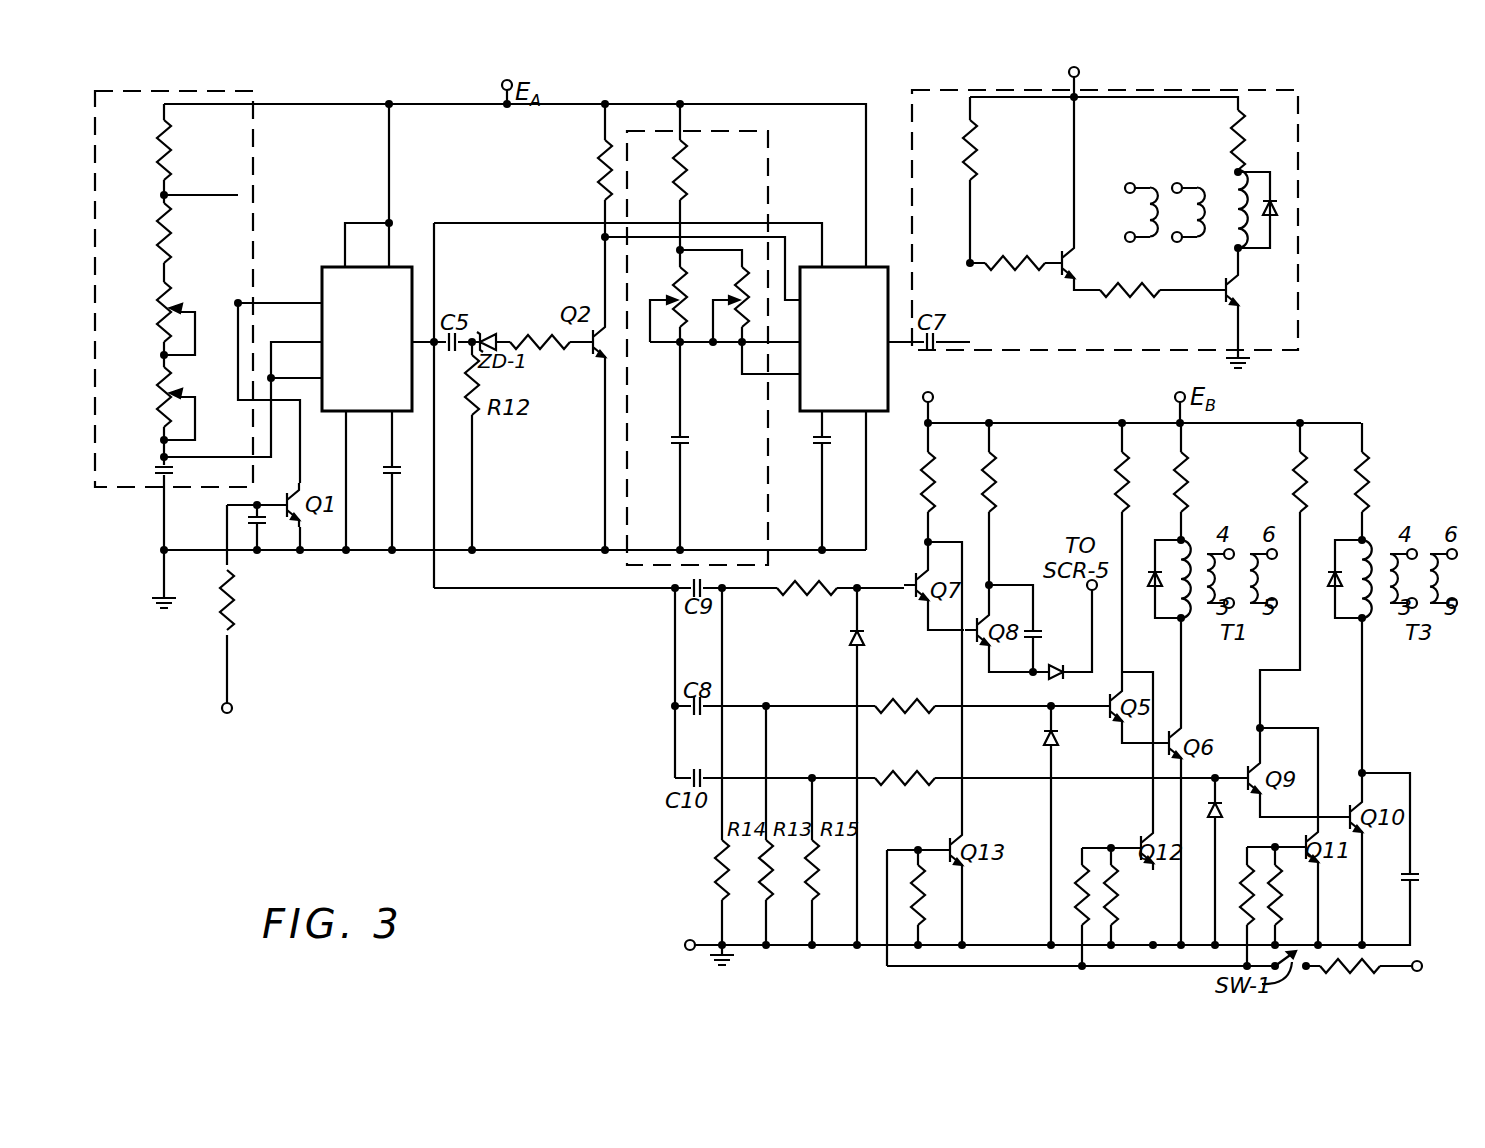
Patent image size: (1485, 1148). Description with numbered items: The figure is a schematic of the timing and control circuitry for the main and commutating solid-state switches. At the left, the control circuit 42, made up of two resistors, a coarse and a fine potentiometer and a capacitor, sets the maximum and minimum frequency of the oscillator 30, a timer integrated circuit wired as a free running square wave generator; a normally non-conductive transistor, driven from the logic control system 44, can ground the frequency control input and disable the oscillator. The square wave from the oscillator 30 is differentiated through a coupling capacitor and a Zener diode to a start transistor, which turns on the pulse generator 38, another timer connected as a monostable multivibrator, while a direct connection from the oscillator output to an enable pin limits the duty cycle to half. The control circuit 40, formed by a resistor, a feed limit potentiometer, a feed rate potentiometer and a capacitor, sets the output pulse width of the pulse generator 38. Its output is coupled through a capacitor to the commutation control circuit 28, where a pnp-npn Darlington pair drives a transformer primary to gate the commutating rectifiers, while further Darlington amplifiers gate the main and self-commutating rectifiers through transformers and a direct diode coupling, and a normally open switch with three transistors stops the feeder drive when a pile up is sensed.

The commutation control circuit 28 is at (1299, 163).
The oscillator 30 is at (322, 267).
The pulse generator 38 is at (888, 354).
The control circuit 40 is at (769, 157).
The control circuit 42 is at (253, 163).
The logic control system 44 is at (232, 636).